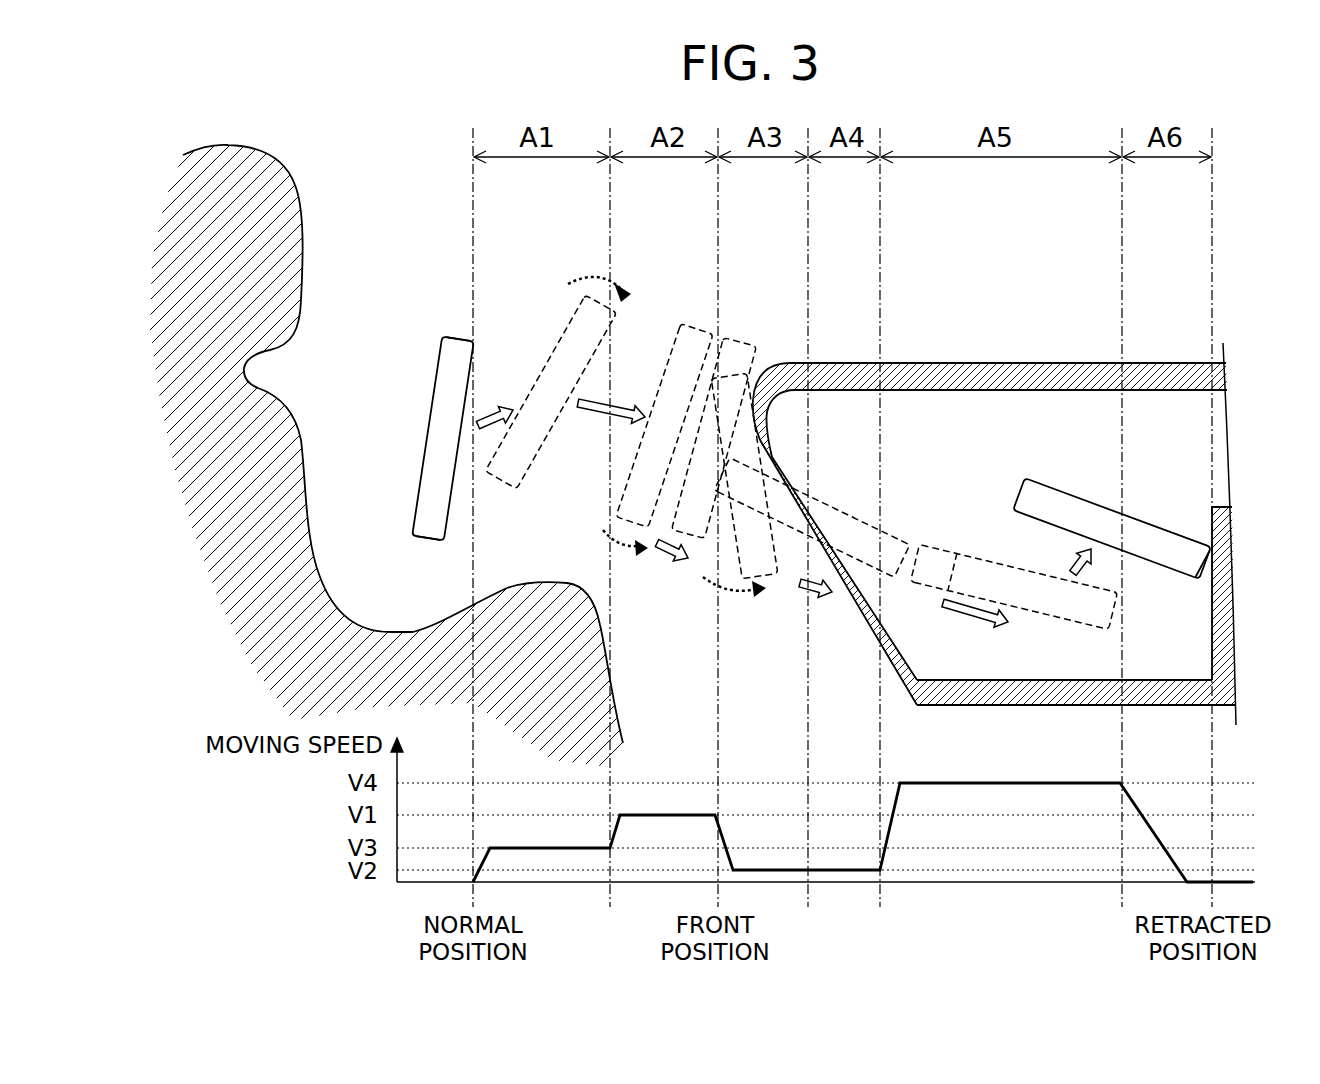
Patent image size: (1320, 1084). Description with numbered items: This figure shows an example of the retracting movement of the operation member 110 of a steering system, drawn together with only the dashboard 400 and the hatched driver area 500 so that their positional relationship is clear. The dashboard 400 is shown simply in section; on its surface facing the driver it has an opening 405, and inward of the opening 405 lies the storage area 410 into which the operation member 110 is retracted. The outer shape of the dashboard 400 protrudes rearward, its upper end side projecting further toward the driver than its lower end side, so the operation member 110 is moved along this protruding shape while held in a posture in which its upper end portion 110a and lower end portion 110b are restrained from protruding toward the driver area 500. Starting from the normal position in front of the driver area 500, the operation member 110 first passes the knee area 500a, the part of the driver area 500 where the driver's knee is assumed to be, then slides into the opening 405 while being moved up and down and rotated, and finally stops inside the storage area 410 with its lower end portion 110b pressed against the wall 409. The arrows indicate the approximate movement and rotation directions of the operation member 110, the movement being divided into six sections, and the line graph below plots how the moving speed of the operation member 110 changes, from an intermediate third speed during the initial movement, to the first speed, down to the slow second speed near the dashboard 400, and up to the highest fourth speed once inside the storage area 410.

The operation member 110 is at (432, 370).
The upper end portion 110a is at (458, 337).
The lower end portion 110b is at (430, 541).
The dashboard 400 is at (1047, 363).
The opening 405 is at (803, 482).
The wall 409 is at (1212, 527).
The storage area 410 is at (947, 493).
The driver area 500 is at (241, 551).
The knee area 500a is at (593, 582).